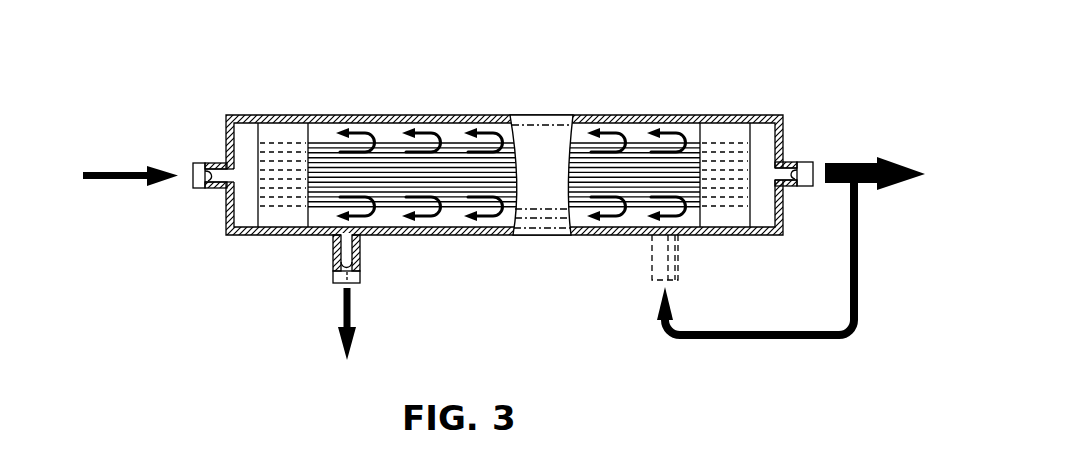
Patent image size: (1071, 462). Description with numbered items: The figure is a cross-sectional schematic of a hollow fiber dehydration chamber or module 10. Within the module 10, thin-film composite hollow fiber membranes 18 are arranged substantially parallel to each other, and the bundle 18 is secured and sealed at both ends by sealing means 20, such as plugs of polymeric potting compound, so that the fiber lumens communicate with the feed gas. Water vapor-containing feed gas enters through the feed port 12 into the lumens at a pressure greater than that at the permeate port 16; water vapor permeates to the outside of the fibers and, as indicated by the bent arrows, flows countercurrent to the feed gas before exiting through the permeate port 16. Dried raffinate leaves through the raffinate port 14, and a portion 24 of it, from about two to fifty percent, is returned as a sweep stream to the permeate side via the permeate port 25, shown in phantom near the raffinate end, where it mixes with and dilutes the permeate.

The module 10 is at (545, 138).
The feed port 12 is at (195, 164).
The raffinate port 14 is at (803, 160).
The permeate port 16 is at (333, 270).
The hollow fiber membranes 18 is at (397, 165).
The sealing means 20 is at (285, 133).
The sweep stream 24 is at (797, 340).
The permeate port 25 is at (672, 255).